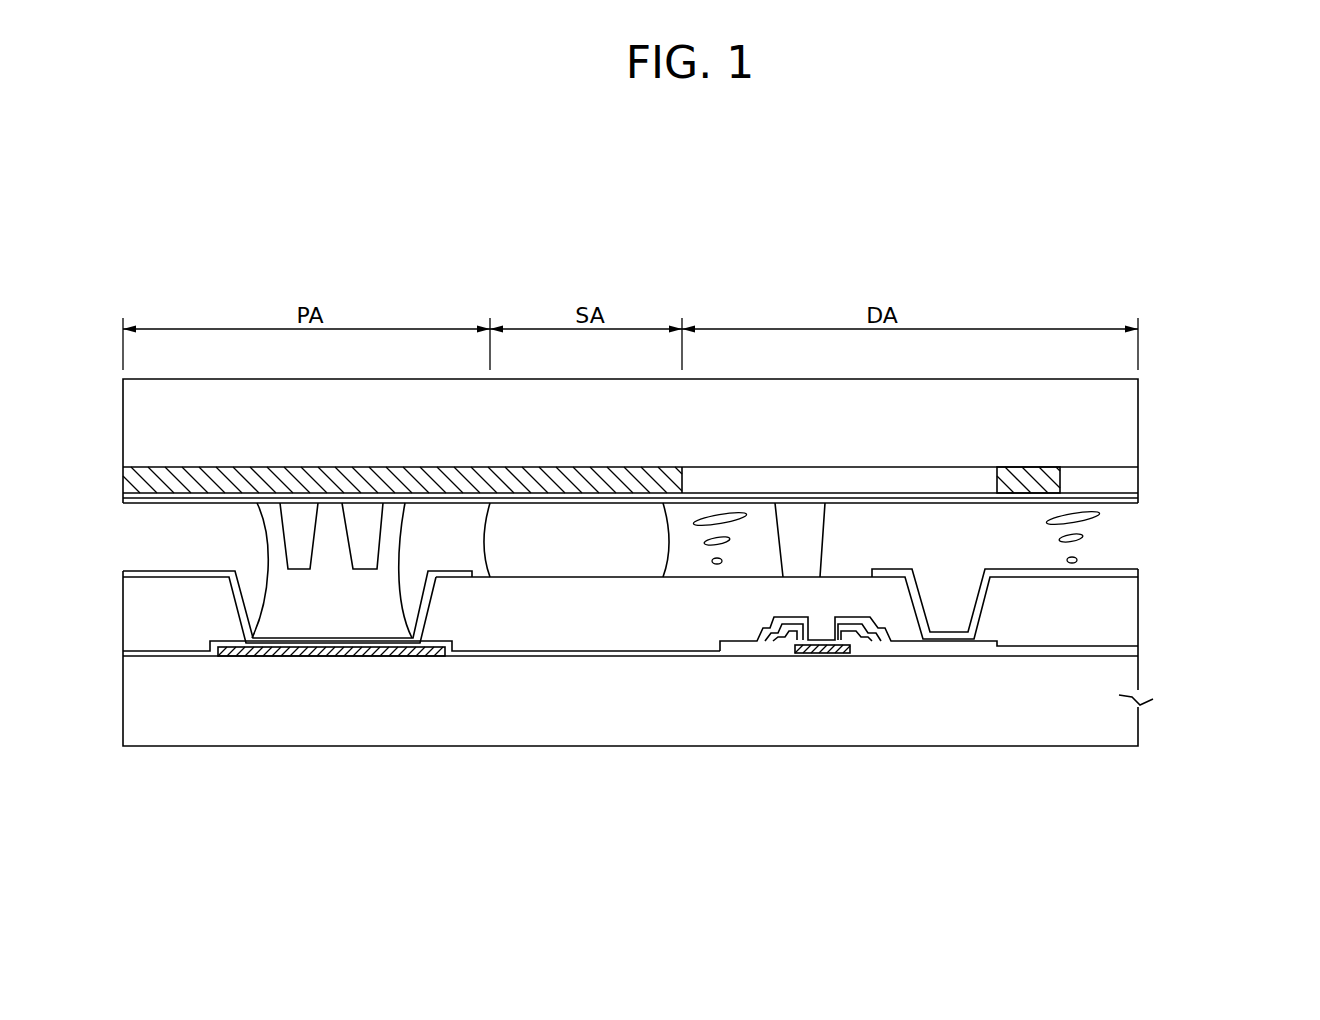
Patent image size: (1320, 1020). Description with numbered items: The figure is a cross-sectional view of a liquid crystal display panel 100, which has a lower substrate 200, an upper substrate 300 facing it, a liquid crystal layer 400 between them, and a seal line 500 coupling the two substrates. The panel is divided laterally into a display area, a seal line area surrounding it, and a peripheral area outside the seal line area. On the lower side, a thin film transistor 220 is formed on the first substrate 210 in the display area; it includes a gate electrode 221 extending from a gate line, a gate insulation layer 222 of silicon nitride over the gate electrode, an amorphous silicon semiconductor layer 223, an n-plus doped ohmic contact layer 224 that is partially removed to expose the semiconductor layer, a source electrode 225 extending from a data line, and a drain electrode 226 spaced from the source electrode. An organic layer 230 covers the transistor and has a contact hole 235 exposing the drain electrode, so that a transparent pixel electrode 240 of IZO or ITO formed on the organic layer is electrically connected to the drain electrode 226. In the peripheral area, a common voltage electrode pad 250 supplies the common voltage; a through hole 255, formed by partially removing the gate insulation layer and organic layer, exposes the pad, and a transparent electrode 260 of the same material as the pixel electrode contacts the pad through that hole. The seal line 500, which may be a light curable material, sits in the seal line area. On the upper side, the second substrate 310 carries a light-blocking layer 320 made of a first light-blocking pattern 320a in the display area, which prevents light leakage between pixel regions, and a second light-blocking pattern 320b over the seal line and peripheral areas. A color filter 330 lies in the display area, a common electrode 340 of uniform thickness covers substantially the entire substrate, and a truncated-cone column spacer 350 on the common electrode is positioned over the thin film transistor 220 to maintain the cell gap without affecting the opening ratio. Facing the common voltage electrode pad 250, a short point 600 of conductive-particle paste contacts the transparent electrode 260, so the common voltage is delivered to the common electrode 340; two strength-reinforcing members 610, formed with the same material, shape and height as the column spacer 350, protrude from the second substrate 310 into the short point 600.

The liquid crystal display panel 100 is at (1264, 415).
The lower substrate 200 is at (1211, 562).
The first substrate 210 is at (1128, 673).
The thin film transistor 220 is at (630, 730).
The gate electrode 221 is at (822, 656).
The gate insulation layer 222 is at (863, 647).
The semiconductor layer 223 is at (776, 651).
The ohmic contact layer 224 is at (868, 636).
The source electrode 225 is at (735, 651).
The drain electrode 226 is at (910, 643).
The organic layer 230 is at (1128, 612).
The contact hole 235 is at (945, 604).
The pixel electrode 240 is at (1128, 572).
The common voltage electrode pad 250 is at (328, 656).
The through hole 255 is at (335, 635).
The transparent electrode 260 is at (127, 575).
The upper substrate 300 is at (1209, 412).
The second substrate 310 is at (1128, 424).
The light-blocking layer 320 is at (1054, 460).
The first light-blocking pattern 320a is at (1025, 467).
The second light-blocking pattern 320b is at (135, 482).
The color filter 330 is at (1128, 471).
The common electrode 340 is at (1128, 497).
The column spacer 350 is at (818, 533).
The liquid crystal layer 400 is at (1128, 533).
The seal line 500 is at (580, 558).
The short point 600 is at (270, 548).
The strength-reinforcing member 610 is at (290, 518).